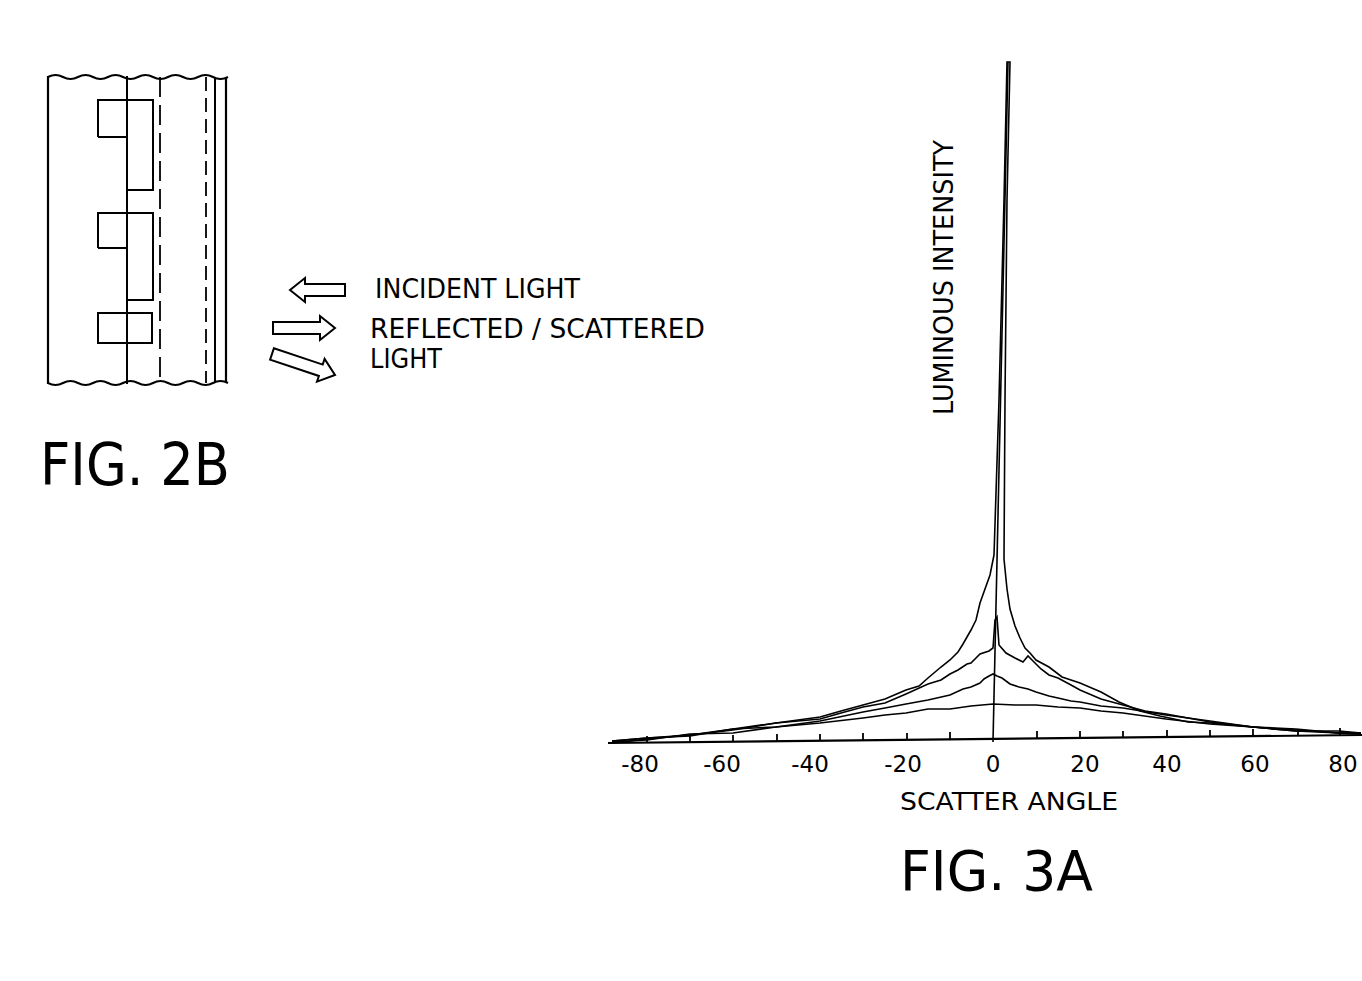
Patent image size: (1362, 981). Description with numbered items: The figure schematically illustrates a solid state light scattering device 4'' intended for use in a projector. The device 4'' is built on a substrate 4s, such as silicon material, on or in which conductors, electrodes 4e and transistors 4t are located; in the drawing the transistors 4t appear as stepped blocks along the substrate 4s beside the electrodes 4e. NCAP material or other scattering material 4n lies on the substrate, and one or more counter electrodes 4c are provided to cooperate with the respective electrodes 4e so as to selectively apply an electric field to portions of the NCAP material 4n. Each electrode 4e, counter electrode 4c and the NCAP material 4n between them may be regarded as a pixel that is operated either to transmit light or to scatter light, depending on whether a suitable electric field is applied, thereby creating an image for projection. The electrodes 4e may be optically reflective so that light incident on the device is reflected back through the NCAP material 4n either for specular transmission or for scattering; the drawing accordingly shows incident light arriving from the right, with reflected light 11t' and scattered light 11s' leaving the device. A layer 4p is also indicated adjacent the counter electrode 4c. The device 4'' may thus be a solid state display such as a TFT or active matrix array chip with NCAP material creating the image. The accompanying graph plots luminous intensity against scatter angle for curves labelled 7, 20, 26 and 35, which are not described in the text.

In FIG. 2B, the solid state light scattering device 4'' is at (148, 208).
In FIG. 2B, the substrate 4s is at (78, 80).
In FIG. 2B, the transistors 4t is at (107, 108).
In FIG. 2B, the electrodes 4e is at (143, 128).
In FIG. 2B, the counter electrode 4c is at (228, 138).
In FIG. 2B, the NCAP material 4n is at (178, 212).
In FIG. 2B, the protective layer 4p is at (175, 256).
In FIG. 2B, the reflected light beam 11t' is at (288, 359).
In FIG. 2B, the scattered light beam 11s' is at (319, 375).
In FIG. 3A, the 7 micron curve 7 is at (1032, 620).
In FIG. 3A, the 20 micron curve 20 is at (955, 653).
In FIG. 3A, the 26 micron curve 26 is at (1048, 682).
In FIG. 3A, the 35 micron curve 35 is at (925, 700).